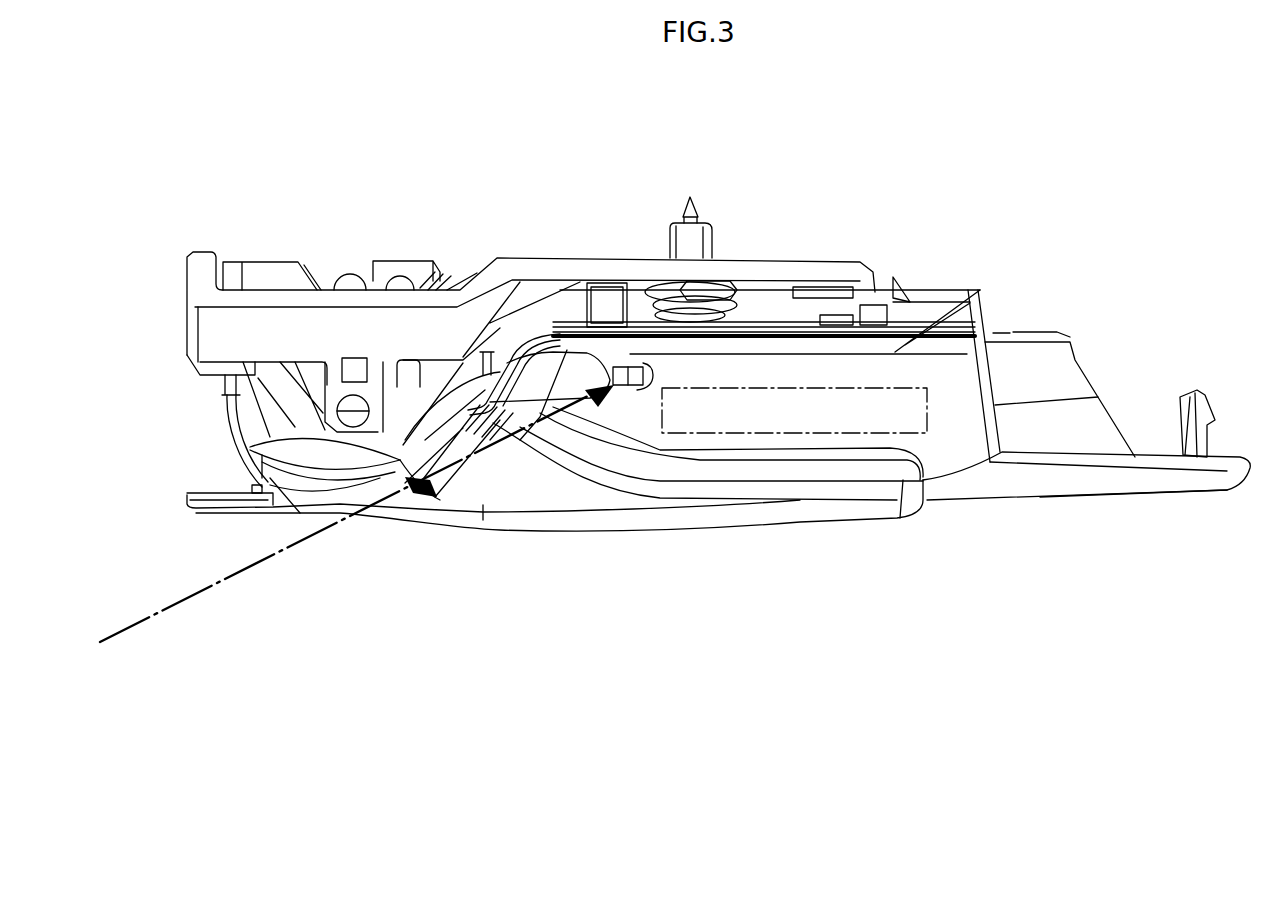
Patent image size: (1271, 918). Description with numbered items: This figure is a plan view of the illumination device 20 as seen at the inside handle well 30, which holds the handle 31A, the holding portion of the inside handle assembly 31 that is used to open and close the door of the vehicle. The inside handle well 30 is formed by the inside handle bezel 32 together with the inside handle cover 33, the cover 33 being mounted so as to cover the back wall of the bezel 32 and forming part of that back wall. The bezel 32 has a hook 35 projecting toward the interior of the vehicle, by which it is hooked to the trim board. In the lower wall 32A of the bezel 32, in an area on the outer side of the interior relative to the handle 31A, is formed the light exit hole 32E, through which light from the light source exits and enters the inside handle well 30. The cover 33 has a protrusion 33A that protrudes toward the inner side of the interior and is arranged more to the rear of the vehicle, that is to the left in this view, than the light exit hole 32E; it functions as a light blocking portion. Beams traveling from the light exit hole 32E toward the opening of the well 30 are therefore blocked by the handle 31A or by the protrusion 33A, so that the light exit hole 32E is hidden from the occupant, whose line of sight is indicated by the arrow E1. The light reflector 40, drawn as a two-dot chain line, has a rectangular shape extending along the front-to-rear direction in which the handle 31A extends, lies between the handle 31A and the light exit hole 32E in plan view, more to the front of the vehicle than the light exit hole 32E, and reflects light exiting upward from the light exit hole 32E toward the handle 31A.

The illumination device 20 is at (531, 335).
The inside handle well 30 is at (266, 247).
The inside handle assembly 31 is at (573, 538).
The handle 31A is at (660, 490).
The inside handle bezel 32 is at (1022, 490).
The lower wall 32A is at (888, 373).
The light exit hole 32E is at (651, 386).
The inside handle cover 33 is at (817, 345).
The protrusion 33A is at (582, 365).
The hook 35 is at (1203, 393).
The light reflector 40 is at (757, 420).
The line of sight E1 is at (287, 552).